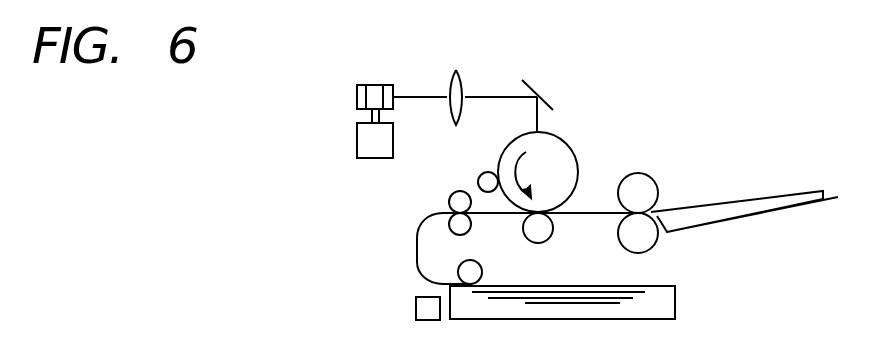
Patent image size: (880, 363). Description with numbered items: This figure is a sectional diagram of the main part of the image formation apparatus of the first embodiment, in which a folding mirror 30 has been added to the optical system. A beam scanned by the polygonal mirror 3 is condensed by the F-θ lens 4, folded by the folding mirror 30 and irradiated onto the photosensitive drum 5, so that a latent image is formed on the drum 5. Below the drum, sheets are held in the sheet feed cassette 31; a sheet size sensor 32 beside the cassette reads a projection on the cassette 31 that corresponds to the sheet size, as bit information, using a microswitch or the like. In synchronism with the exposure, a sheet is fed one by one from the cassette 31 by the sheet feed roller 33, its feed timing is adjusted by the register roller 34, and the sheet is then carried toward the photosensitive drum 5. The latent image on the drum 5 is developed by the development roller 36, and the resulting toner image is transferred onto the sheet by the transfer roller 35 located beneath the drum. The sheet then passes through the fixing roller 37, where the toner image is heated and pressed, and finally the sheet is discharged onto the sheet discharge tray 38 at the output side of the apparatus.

The polygonal mirror 3 is at (375, 85).
The F-θ lens 4 is at (462, 71).
The folding mirror 30 is at (533, 90).
The photosensitive drum 5 is at (567, 138).
The development roller 36 is at (490, 172).
The register roller 34 is at (458, 191).
The transfer roller 35 is at (556, 235).
The sheet feed roller 33 is at (483, 268).
The fixing roller 37 is at (647, 174).
The sheet discharge tray 38 is at (743, 210).
The sheet feed cassette 31 is at (676, 300).
The sheet size sensor 32 is at (416, 306).